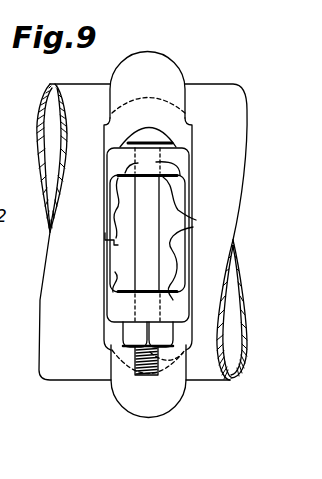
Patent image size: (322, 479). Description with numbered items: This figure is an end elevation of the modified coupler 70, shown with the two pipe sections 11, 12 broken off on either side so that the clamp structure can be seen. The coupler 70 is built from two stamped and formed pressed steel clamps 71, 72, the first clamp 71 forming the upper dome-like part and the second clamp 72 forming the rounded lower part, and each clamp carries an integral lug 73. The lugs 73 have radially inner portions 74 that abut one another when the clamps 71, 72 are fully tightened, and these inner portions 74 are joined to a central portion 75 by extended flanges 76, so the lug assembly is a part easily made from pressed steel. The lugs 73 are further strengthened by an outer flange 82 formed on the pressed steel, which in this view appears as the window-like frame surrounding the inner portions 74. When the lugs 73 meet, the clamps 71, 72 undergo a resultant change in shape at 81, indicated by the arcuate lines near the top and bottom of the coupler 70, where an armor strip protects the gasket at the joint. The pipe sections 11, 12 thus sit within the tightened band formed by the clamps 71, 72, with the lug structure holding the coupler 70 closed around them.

The coupler 70 is at (185, 59).
The clamp 71 is at (118, 75).
The clamp 72 is at (123, 402).
The lug 73 is at (112, 172).
The radially inner portion 74 is at (204, 252).
The central portion 75 is at (185, 143).
The extended flange 76 is at (150, 308).
The change in shape of the clamps 81 is at (182, 113).
The outer flange 82 is at (184, 219).
The pipe section 11 is at (60, 373).
The pipe section 12 is at (218, 377).